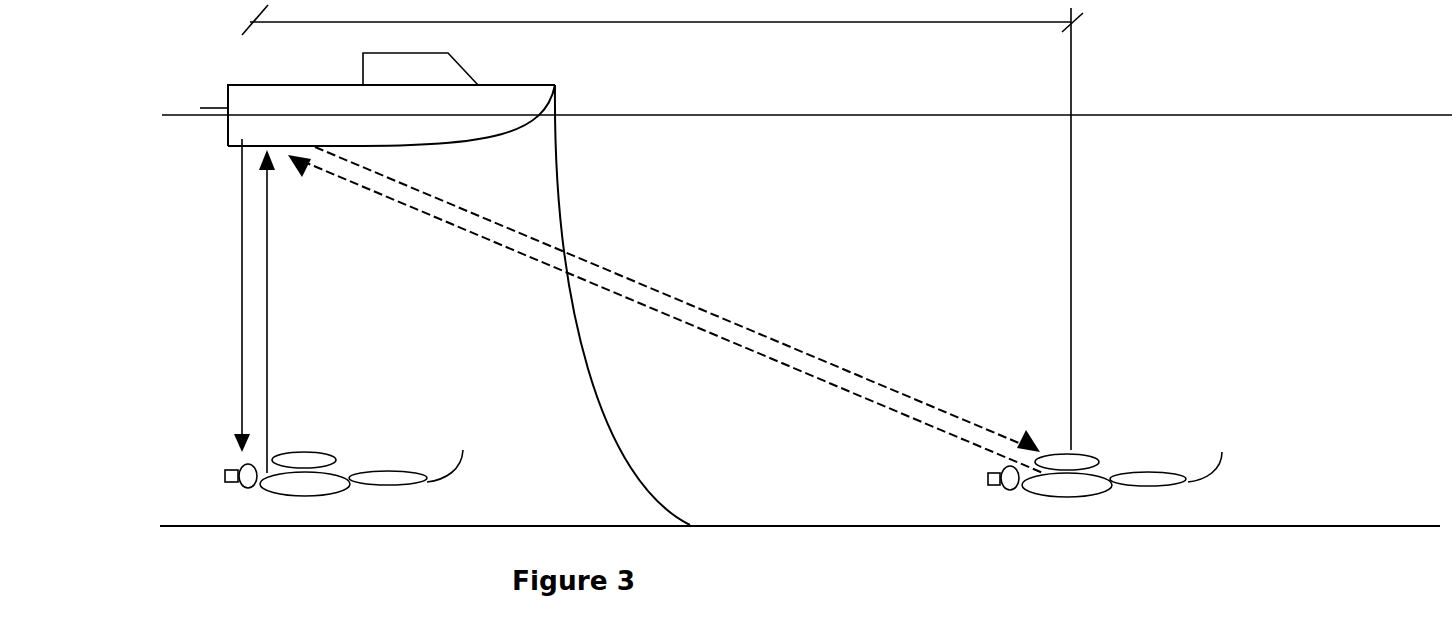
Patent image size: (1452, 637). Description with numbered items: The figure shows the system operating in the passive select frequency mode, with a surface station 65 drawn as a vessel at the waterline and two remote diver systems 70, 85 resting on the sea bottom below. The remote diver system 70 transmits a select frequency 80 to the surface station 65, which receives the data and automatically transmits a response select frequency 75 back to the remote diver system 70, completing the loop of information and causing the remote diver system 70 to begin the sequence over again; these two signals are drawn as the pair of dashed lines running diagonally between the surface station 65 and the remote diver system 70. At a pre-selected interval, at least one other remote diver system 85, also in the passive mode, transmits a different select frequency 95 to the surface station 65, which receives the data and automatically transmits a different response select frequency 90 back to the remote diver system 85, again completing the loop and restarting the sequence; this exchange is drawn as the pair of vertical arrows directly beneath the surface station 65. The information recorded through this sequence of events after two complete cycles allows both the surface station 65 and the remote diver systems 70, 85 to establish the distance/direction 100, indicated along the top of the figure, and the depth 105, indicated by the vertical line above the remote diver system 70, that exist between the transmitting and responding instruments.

The surface station 65 is at (493, 83).
The remote diver system 70 is at (1117, 472).
The response select frequency 75 is at (687, 307).
The select frequency 80 is at (705, 328).
The other remote diver system 85 is at (360, 472).
The different response select frequency 90 is at (243, 303).
The different select frequency 95 is at (267, 303).
The distance/direction 100 is at (623, 22).
The depth 105 is at (1071, 275).